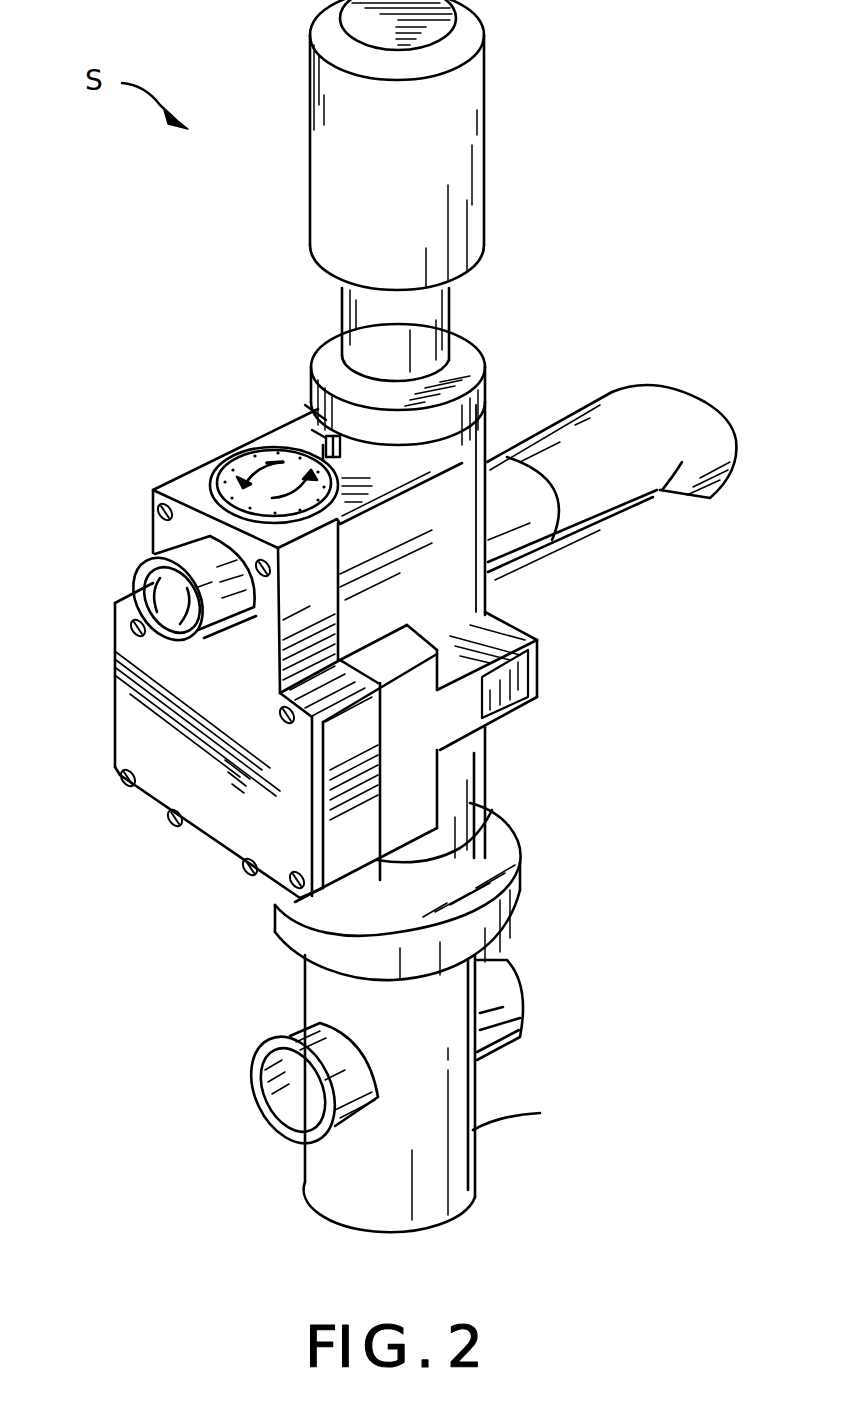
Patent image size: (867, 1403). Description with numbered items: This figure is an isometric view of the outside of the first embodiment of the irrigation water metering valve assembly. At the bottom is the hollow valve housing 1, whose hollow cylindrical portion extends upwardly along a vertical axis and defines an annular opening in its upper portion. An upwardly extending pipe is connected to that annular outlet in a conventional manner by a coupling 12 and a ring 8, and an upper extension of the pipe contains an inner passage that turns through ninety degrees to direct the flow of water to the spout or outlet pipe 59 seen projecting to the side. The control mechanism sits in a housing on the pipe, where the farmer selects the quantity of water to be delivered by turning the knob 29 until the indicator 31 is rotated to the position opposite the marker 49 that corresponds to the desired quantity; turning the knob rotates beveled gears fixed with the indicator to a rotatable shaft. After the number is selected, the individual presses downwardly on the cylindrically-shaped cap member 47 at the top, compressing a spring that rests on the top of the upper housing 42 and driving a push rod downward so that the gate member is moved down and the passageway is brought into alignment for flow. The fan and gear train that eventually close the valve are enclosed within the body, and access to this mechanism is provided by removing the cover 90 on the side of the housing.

The cap member 47 is at (484, 127).
The upper housing 42 is at (470, 360).
The outlet pipe 59 is at (625, 390).
The marker 49 is at (312, 428).
The indicator 31 is at (267, 482).
The knob 29 is at (182, 552).
The cover 90 is at (187, 728).
The coupling 12 is at (474, 832).
The ring 8 is at (515, 910).
The valve housing 1 is at (477, 1130).